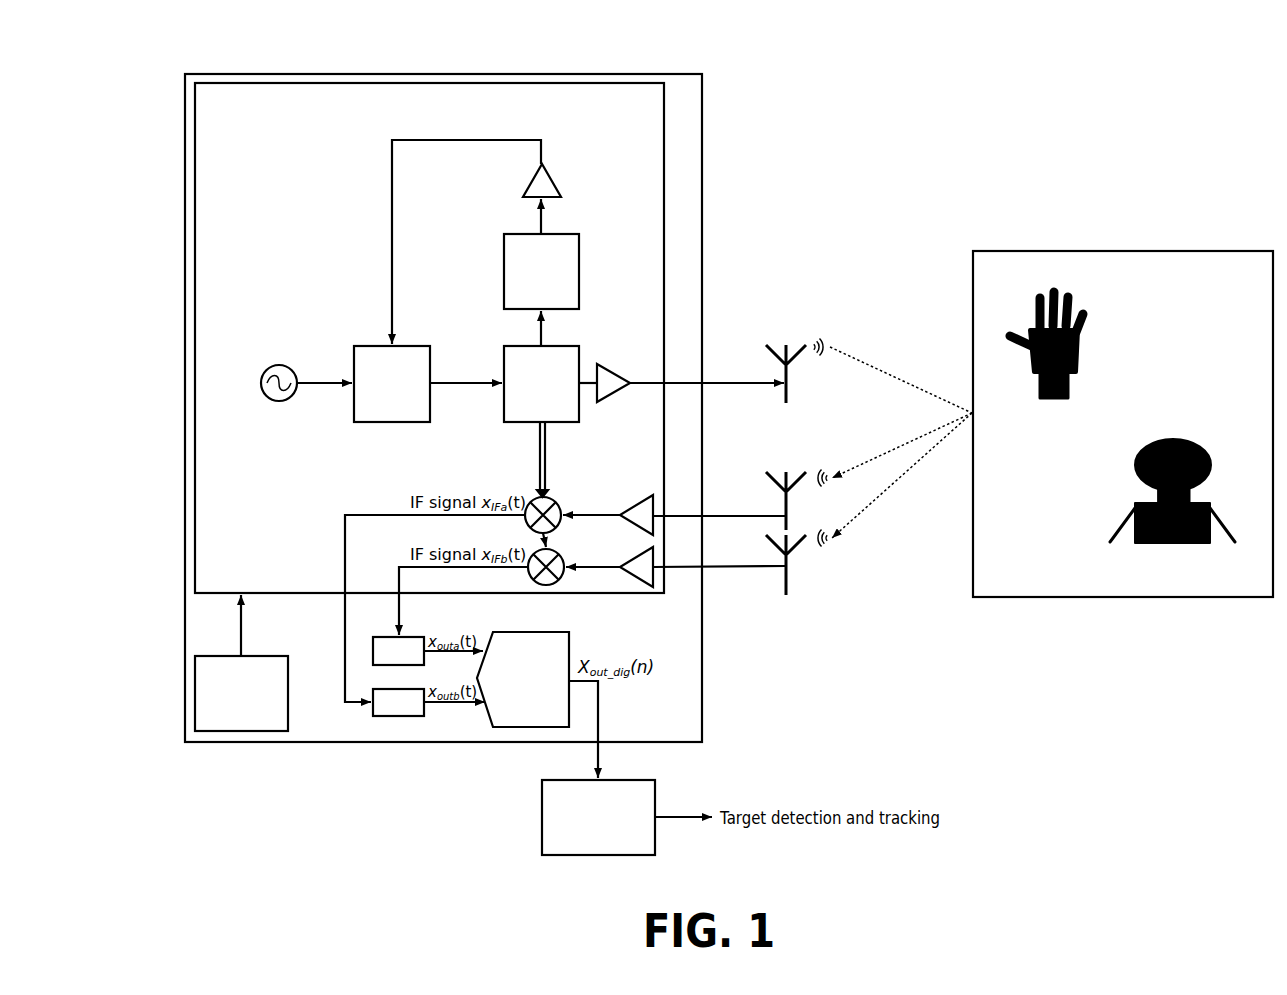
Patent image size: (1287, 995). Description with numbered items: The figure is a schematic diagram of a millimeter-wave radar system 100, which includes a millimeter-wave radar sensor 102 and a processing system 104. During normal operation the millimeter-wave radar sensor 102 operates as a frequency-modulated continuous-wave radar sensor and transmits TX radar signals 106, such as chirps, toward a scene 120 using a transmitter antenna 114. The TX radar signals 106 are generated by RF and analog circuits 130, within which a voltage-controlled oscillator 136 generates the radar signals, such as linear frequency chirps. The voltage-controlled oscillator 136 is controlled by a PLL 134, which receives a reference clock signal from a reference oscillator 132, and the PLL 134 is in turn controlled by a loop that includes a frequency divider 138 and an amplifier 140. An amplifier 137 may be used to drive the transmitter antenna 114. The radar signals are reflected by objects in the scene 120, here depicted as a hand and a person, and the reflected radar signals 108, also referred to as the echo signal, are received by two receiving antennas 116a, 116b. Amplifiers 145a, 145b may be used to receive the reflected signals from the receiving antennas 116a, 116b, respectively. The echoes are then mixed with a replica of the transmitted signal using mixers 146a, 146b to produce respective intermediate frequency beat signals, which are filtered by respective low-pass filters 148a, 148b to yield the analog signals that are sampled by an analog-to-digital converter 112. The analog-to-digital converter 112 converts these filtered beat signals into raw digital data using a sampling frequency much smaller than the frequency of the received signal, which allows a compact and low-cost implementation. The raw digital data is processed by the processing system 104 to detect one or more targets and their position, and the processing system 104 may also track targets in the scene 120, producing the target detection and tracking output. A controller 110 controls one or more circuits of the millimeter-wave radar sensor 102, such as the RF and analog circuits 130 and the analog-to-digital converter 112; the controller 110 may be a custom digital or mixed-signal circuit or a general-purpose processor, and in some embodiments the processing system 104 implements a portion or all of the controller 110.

The millimeter-wave radar system 100 is at (118, 84).
The millimeter-wave radar sensor 102 is at (704, 169).
The processing system 104 is at (638, 784).
The TX radar signals 106 is at (812, 338).
The reflected radar signals 108 is at (812, 462).
The controller 110 is at (270, 657).
The analog-to-digital converter (ADC) 112 is at (498, 633).
The transmitter (TX) antenna 114 is at (788, 397).
The receiving antenna 116a is at (788, 527).
The receiving antenna 116b is at (788, 593).
The scene 120 is at (1072, 252).
The RF and analog circuits 130 is at (628, 594).
The reference oscillator 132 is at (261, 381).
The PLL 134 is at (416, 346).
The voltage-controlled oscillator (VCO) 136 is at (566, 346).
The amplifier 137 is at (601, 404).
The frequency divider 138 is at (564, 234).
The amplifier 140 is at (551, 171).
The amplifier 145a is at (632, 503).
The amplifier 145b is at (622, 576).
The mixer 146a is at (558, 501).
The mixer 146b is at (562, 553).
The low-pass filter 148a is at (408, 638).
The low-pass filter 148b is at (408, 690).